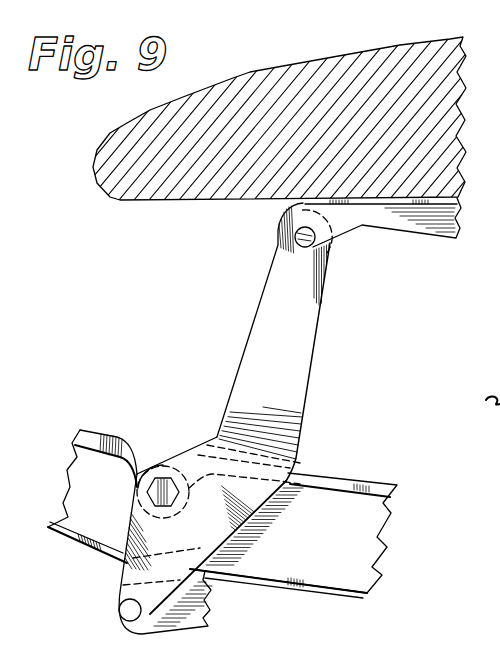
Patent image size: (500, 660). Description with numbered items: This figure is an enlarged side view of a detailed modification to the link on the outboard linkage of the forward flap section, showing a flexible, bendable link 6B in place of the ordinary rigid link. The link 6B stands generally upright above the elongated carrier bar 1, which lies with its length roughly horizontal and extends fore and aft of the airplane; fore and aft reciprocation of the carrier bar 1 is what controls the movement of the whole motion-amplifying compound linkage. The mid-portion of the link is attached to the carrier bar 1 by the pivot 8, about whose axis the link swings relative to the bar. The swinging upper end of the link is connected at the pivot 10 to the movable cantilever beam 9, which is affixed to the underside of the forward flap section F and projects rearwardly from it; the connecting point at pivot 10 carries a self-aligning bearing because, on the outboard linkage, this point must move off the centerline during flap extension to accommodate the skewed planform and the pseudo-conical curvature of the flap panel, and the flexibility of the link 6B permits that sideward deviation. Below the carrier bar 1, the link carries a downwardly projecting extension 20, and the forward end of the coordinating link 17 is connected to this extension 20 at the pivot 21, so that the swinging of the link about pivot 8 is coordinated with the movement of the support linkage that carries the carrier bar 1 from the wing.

The foot F is at (453, 98).
The carrier bar 1 is at (343, 487).
The flexible link 6B is at (298, 357).
The pivot 8 is at (163, 478).
The cantilever beam 9 is at (415, 222).
The pivot 10 is at (336, 52).
The coordinating link 17 is at (172, 621).
The extension 20 is at (140, 540).
The pivot 21 is at (126, 609).